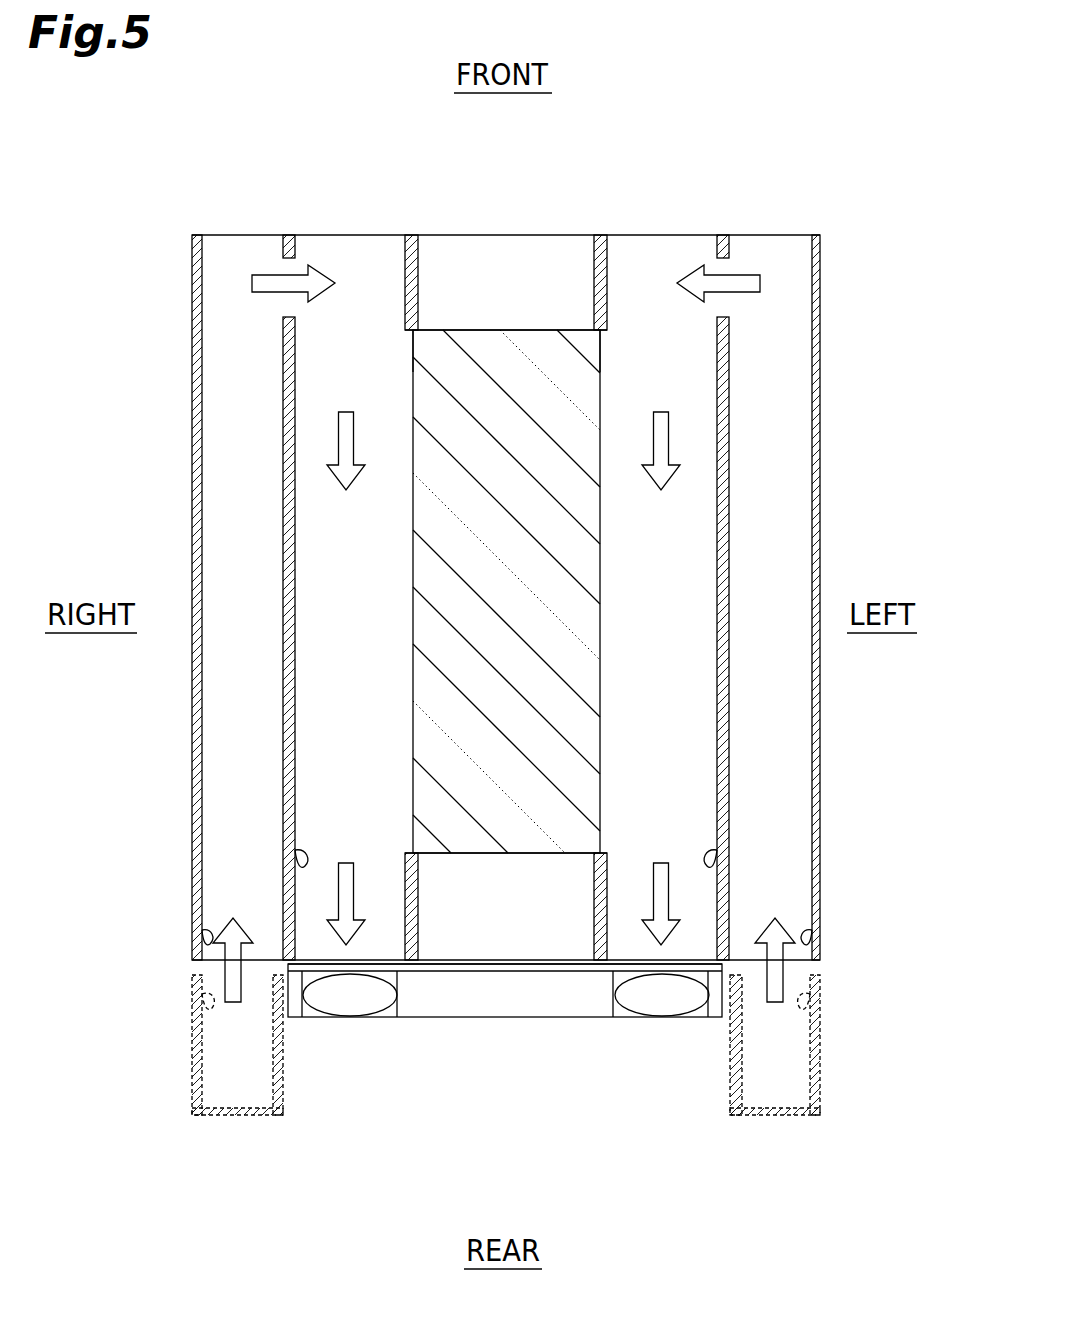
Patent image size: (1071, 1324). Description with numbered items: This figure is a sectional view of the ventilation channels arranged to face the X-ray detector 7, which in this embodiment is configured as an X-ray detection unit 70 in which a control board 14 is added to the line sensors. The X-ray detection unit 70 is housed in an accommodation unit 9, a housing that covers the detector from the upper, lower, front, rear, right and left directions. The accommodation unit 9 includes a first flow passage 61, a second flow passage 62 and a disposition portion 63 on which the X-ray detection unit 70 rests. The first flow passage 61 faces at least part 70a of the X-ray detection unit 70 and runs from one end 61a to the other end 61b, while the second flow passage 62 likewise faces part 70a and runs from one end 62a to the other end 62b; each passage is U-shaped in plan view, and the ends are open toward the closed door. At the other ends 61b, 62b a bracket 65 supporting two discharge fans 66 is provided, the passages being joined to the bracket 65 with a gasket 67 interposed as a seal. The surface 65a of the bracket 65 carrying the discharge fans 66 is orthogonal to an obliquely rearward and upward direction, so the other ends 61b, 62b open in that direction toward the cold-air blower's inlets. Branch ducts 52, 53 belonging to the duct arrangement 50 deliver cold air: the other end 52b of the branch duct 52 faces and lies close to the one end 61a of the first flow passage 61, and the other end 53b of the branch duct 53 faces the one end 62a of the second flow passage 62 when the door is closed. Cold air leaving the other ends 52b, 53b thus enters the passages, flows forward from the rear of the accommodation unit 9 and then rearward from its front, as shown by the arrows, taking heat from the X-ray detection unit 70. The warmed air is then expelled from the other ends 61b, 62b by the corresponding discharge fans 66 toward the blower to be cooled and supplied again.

The accommodation unit 9 is at (526, 541).
The X-ray detector 7 is at (517, 365).
The X-ray detection unit 70 is at (506, 266).
The part of the X-ray detection unit 70a is at (413, 368).
The control board 14 is at (555, 710).
The second flow passage 62 is at (283, 448).
The first flow passage 61 is at (729, 448).
The one end of the second flow passage 62a is at (202, 934).
The other end of the second flow passage 62b is at (295, 856).
The one end of the first flow passage 61a is at (812, 934).
The other end of the first flow passage 61b is at (717, 856).
The disposition portion 63 is at (540, 852).
The bracket 65 is at (505, 1055).
The surface of the bracket 65a is at (505, 992).
The discharge fan 66 is at (352, 1000).
The gasket 67 is at (396, 962).
The exhaust ducts 50 is at (509, 1045).
The branch duct 52 is at (844, 1045).
The other end of the branch duct 52b is at (810, 998).
The branch duct 53 is at (171, 1045).
The other end of the branch duct 53b is at (158, 1002).